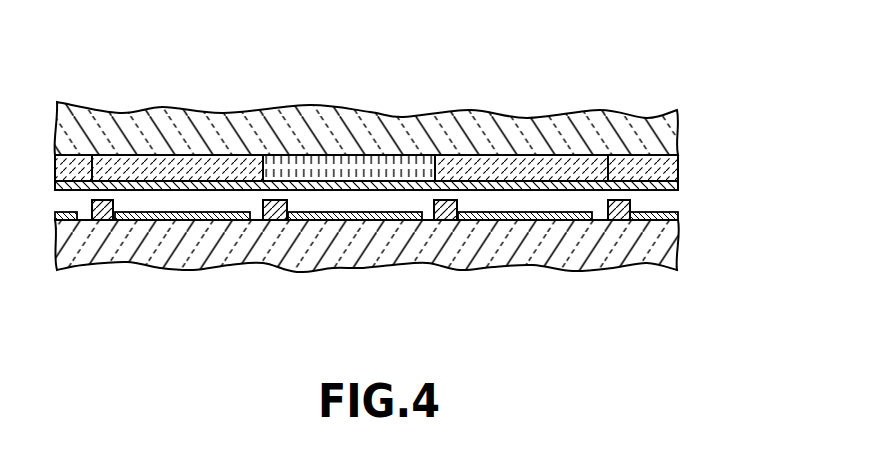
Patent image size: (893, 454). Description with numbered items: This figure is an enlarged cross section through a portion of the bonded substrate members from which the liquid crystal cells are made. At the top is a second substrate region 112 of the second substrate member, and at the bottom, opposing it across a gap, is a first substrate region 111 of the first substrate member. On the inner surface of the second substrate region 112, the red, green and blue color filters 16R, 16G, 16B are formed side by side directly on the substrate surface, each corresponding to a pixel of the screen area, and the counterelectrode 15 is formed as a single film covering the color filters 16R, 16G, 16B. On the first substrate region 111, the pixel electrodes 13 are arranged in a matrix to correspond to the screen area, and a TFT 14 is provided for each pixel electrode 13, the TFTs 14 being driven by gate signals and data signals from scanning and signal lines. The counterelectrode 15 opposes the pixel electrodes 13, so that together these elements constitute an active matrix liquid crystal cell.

The second substrate region 112 is at (665, 140).
The first substrate region 111 is at (665, 245).
The red color filter 16R is at (150, 167).
The green color filter 16G is at (310, 167).
The blue color filter 16B is at (548, 170).
The counterelectrode 15 is at (465, 187).
The pixel electrode 13 is at (193, 220).
The TFT 14 is at (280, 212).